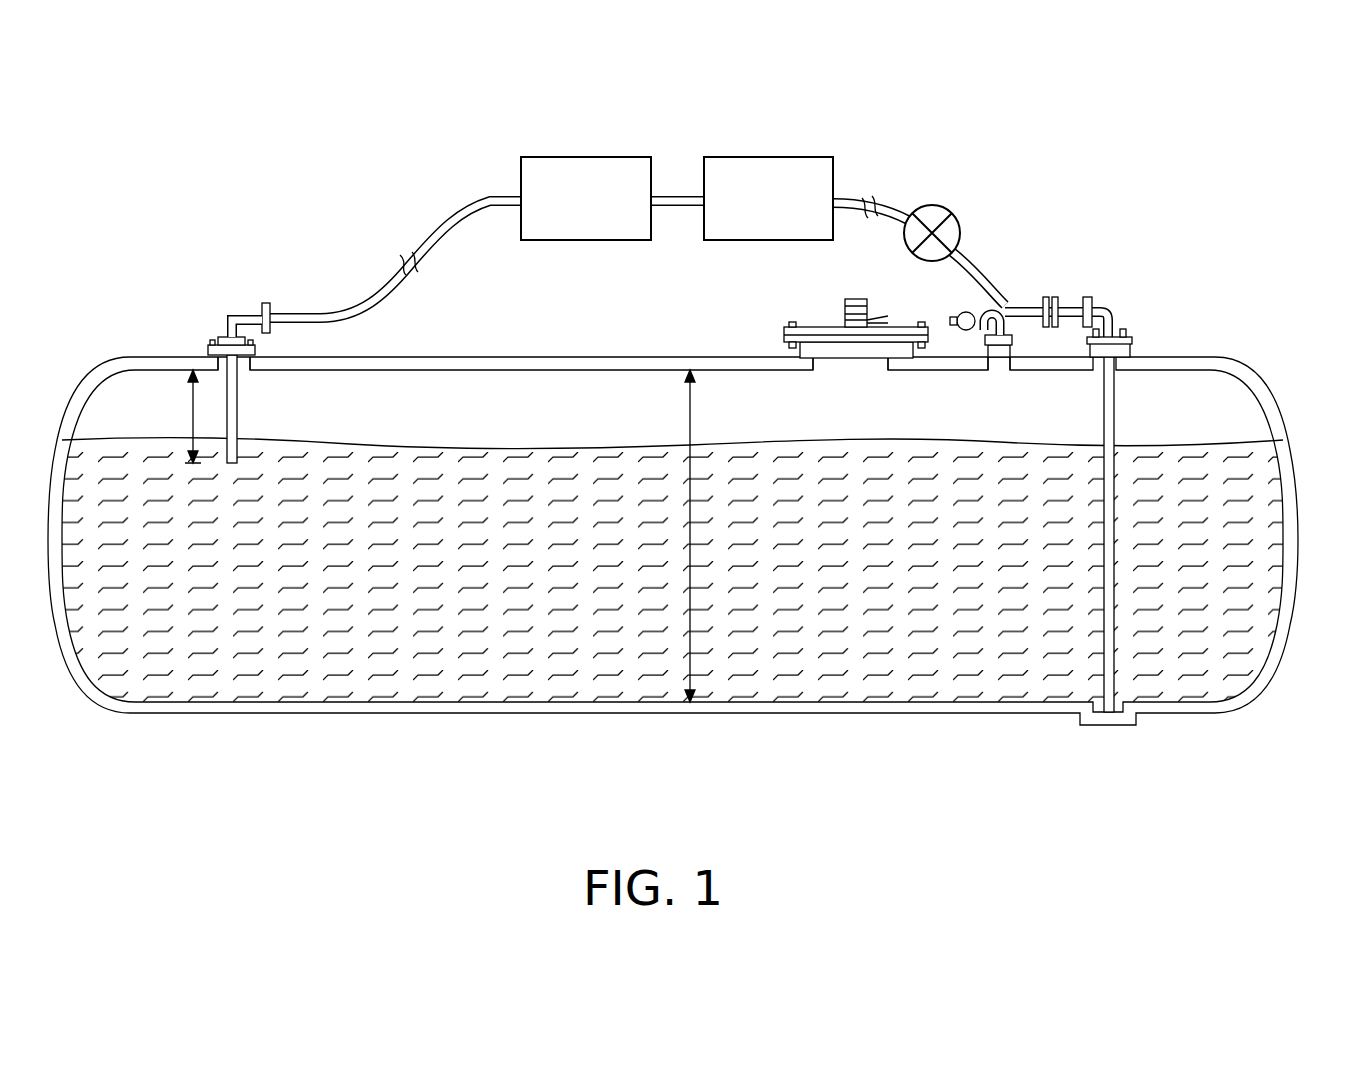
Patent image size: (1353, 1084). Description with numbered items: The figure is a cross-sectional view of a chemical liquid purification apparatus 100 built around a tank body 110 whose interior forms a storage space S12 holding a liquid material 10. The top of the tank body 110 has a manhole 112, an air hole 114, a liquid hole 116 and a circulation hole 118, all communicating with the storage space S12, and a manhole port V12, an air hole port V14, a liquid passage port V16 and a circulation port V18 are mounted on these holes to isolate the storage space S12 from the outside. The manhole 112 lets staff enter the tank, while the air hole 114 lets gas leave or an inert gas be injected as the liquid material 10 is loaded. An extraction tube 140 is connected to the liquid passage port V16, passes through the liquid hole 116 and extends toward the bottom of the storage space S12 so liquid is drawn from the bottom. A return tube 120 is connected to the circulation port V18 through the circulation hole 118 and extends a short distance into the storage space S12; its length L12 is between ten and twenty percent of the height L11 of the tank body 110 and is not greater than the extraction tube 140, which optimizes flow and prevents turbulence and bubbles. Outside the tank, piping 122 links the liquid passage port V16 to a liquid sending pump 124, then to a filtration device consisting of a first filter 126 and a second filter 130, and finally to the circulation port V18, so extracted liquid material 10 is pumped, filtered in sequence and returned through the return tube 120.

The chemical liquid purification apparatus 100 is at (1286, 803).
The liquid material 10 is at (603, 632).
The tank body 110 is at (257, 712).
The manhole 112 is at (848, 362).
The air hole 114 is at (999, 362).
The liquid hole 116 is at (1120, 370).
The circulation hole 118 is at (240, 368).
The return tube 120 is at (237, 420).
The piping 122 is at (468, 210).
The liquid sending pump 124 is at (937, 212).
The first filter 126 is at (778, 165).
The second filter 130 is at (598, 165).
The extraction tube 140 is at (1112, 430).
The manhole port V12 is at (815, 332).
The air hole port V14 is at (1012, 312).
The liquid passage port V16 is at (1132, 350).
The circulation port V18 is at (210, 343).
The storage space S12 is at (488, 417).
The height of the tank body L11 is at (716, 536).
The length of the return tube L12 is at (173, 416).